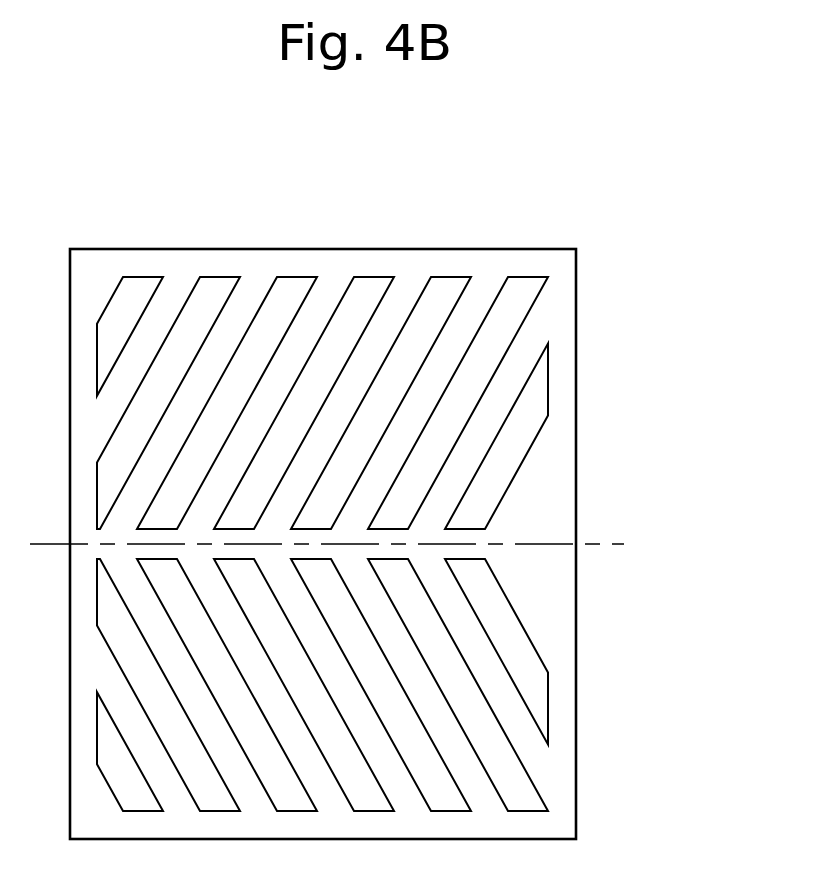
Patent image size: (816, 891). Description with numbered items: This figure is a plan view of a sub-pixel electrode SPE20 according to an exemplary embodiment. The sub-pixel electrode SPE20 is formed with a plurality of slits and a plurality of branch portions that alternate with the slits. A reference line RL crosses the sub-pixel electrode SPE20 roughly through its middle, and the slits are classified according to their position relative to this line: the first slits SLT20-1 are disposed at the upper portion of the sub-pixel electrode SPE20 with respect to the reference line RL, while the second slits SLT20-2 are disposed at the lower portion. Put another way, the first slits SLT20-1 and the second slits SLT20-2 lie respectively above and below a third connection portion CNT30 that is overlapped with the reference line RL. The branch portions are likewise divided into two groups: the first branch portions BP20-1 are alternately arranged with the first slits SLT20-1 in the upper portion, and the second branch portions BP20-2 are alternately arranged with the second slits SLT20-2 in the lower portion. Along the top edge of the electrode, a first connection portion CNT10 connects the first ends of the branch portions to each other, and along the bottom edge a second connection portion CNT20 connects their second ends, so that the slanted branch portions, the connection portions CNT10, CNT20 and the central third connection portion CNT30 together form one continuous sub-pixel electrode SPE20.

The sub-pixel electrode SPE20 is at (528, 240).
The first connection portion CNT10 is at (515, 263).
The first branch portions BP20-1 is at (515, 367).
The first slits SLT20-1 is at (539, 390).
The third connection portion CNT30 is at (428, 540).
The reference line RL is at (341, 543).
The second slits SLT20-2 is at (539, 668).
The second branch portions BP20-2 is at (515, 722).
The second connection portion CNT20 is at (515, 825).